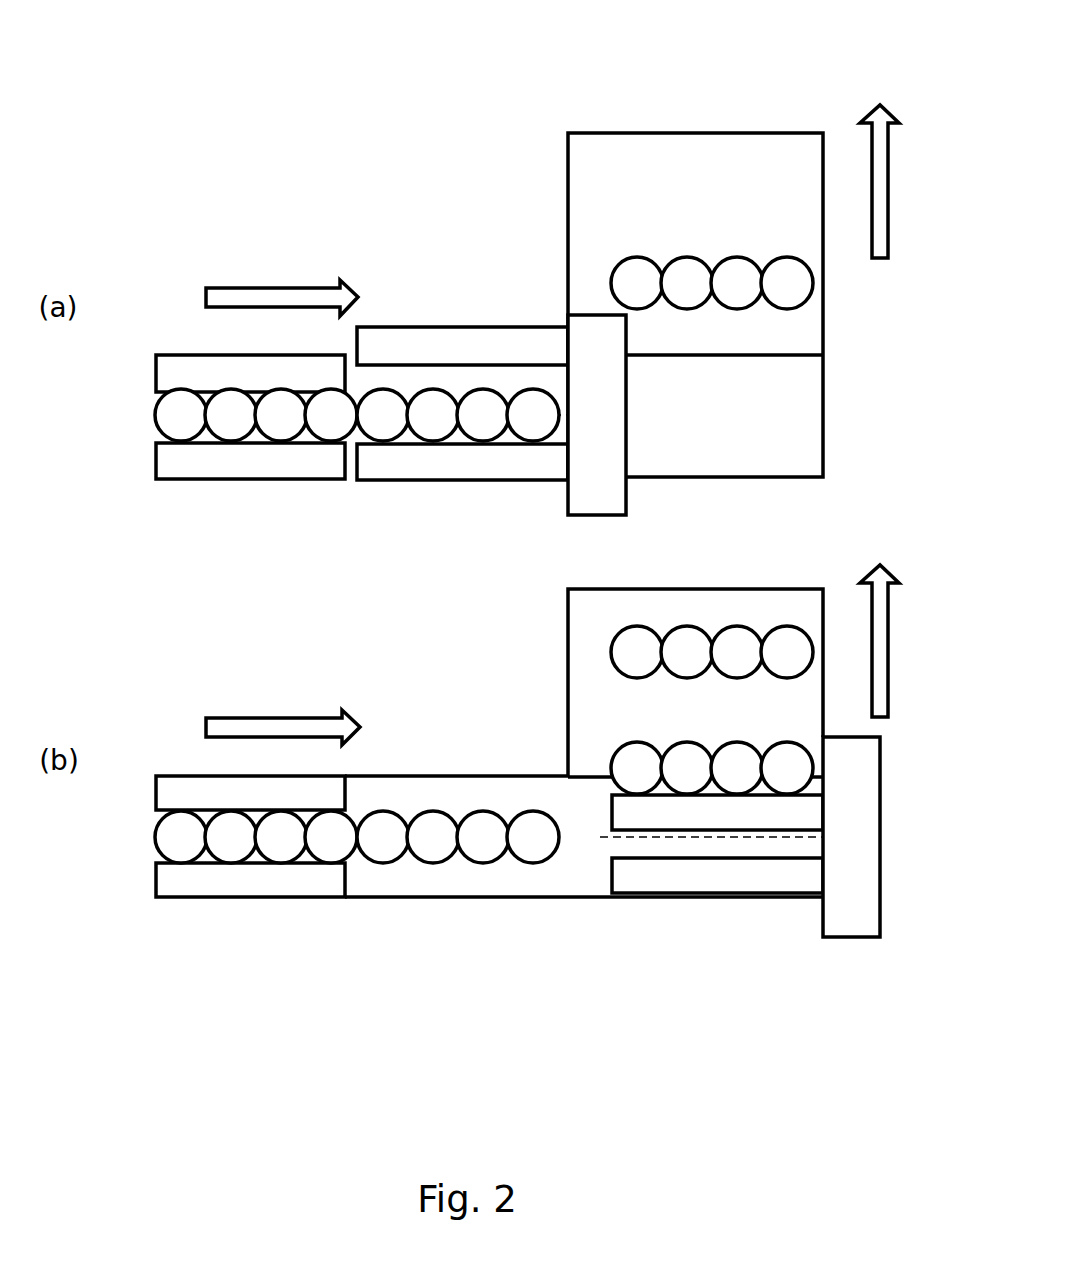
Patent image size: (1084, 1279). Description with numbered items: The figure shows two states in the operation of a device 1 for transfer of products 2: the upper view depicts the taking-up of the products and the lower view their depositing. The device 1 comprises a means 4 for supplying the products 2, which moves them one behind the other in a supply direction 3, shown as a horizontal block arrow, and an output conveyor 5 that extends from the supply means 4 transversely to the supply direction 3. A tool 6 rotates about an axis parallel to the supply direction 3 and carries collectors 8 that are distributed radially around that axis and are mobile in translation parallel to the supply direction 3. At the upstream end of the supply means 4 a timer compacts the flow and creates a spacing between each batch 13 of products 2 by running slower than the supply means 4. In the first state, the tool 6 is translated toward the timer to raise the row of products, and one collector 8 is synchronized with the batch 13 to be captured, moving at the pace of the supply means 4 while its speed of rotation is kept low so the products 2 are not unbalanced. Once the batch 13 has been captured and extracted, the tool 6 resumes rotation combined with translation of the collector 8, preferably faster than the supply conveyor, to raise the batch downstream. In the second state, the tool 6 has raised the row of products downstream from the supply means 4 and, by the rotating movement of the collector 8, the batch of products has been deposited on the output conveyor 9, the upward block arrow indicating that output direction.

The device for transfer of products 1 is at (425, 168).
The products 2 is at (430, 833).
The supply direction 3 is at (277, 283).
The supply means 4 is at (247, 965).
The output conveyor 5 is at (748, 193).
The tool 6 is at (882, 973).
The collectors 8 is at (652, 872).
The output conveyor 9 is at (878, 168).
The batch of products 13 is at (812, 284).